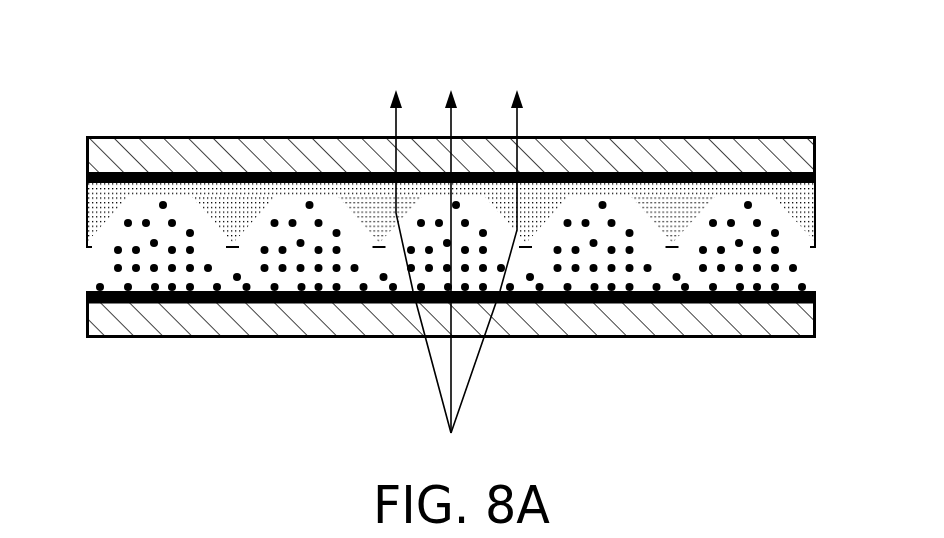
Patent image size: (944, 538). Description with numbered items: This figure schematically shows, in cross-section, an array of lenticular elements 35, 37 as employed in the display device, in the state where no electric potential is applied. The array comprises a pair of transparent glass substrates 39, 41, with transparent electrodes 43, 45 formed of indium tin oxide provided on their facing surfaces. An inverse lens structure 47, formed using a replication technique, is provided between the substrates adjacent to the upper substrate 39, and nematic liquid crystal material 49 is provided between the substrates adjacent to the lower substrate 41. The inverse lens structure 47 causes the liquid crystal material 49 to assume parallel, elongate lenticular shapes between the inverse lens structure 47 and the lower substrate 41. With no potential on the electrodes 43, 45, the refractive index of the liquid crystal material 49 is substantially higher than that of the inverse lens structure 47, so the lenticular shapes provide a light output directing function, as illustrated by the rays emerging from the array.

The lenticular element 35 is at (454, 227).
The lenticular element 37 is at (203, 75).
The upper transparent glass substrate 39 is at (95, 157).
The lower transparent glass substrate 41 is at (97, 320).
The transparent electrode 43 is at (816, 177).
The transparent electrode 45 is at (816, 296).
The inverse lens structure 47 is at (97, 207).
The nematic liquid crystal material 49 is at (797, 268).